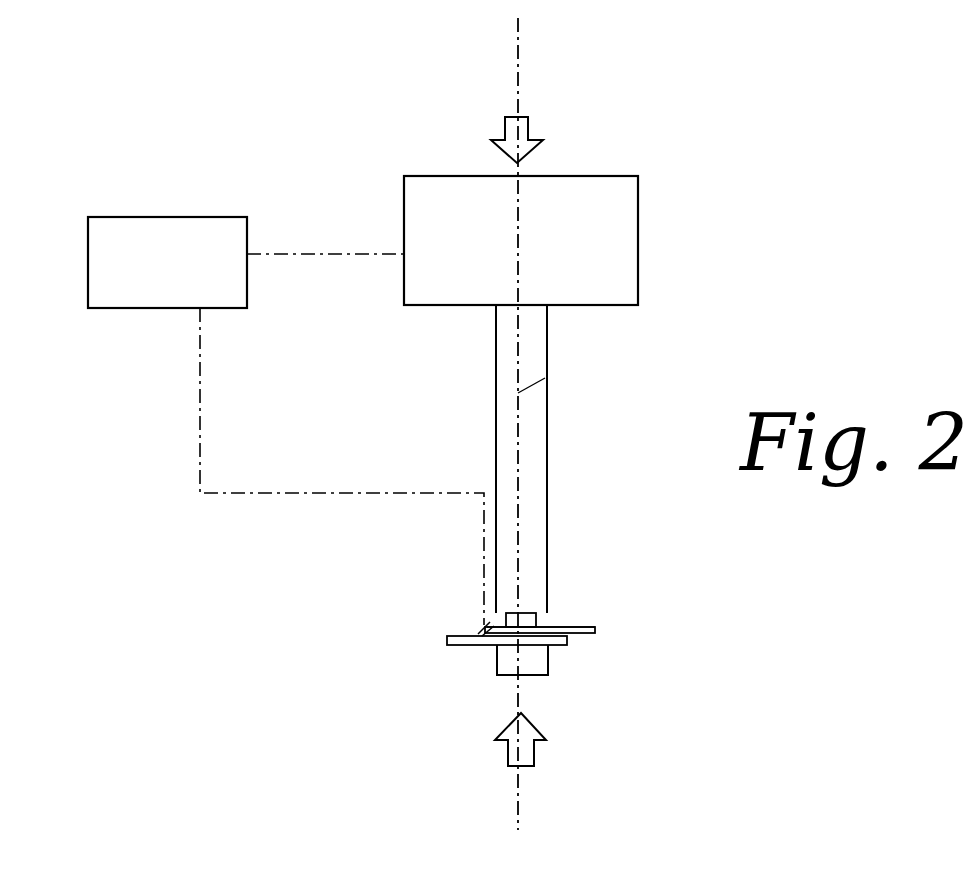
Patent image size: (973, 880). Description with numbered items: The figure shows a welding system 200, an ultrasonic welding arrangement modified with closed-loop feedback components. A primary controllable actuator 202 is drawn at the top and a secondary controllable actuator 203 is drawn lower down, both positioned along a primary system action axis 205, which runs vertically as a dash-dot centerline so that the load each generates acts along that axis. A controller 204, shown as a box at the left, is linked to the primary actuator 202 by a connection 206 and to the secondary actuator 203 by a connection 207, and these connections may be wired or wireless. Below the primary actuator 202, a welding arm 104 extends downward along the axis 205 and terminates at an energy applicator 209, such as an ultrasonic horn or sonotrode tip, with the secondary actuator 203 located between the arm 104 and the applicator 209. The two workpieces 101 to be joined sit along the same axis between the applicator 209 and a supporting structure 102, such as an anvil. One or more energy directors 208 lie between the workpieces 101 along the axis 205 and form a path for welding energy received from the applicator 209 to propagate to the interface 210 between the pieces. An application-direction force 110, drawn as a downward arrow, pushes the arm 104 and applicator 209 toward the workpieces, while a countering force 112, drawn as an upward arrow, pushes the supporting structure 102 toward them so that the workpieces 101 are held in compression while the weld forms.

The welding system 200 is at (660, 357).
The primary controllable actuator 202 is at (404, 236).
The controller 204 is at (200, 277).
The system action axis 205 is at (548, 376).
The connection 206 is at (283, 256).
The connection 207 is at (300, 494).
The secondary controllable actuator 203 is at (540, 617).
The energy directors 208 is at (490, 654).
The energy applicator 209 is at (545, 626).
The interface 210 is at (478, 630).
The welding arm 104 is at (495, 430).
The workpieces 101 is at (485, 630).
The supporting structure 102 is at (498, 664).
The application-direction force 110 is at (530, 128).
The countering force 112 is at (540, 745).